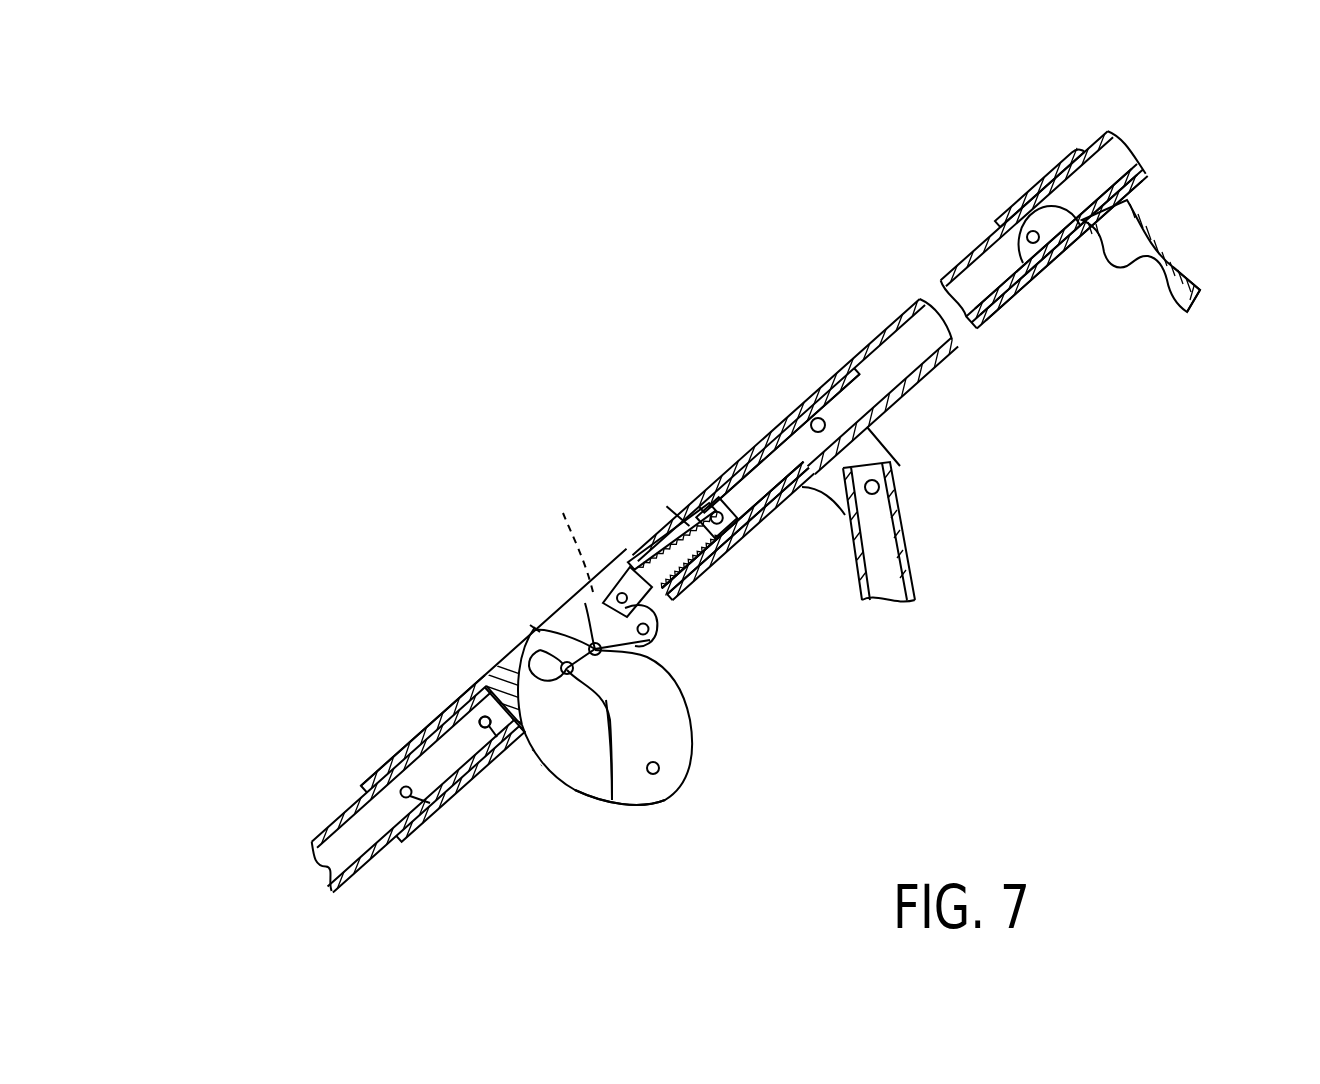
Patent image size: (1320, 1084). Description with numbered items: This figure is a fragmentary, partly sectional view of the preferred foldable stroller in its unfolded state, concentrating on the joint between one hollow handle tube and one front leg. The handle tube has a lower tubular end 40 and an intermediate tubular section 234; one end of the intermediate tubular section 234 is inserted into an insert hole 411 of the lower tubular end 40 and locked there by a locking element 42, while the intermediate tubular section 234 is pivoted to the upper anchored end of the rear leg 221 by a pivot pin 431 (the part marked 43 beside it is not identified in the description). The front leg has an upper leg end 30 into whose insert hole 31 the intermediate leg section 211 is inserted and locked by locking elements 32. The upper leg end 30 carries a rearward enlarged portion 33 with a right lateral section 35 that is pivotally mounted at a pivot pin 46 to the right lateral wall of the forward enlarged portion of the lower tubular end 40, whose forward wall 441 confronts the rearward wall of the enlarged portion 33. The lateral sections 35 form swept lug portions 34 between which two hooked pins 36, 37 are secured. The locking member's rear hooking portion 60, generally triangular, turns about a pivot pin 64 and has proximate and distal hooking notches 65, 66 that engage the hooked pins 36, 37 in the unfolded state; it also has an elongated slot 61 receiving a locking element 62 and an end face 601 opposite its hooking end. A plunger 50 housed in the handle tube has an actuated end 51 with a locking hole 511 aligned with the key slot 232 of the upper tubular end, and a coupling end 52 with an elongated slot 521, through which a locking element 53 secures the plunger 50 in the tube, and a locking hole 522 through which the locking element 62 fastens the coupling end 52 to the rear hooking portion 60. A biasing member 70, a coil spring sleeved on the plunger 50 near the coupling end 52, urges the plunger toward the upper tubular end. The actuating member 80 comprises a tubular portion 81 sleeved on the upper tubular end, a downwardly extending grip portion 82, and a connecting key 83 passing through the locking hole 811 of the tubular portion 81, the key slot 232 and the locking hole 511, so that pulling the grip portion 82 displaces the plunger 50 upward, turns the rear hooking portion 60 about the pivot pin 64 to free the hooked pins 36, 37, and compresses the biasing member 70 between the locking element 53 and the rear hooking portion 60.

The intermediate leg section 211 is at (338, 845).
The rear leg 221 is at (915, 578).
The key slot 232 is at (1083, 230).
The intermediate tubular section 234 is at (888, 322).
The upper leg end 30 is at (412, 738).
The insert hole 31 is at (385, 765).
The locking element 32 is at (430, 803).
The rearward enlarged portion 33 is at (497, 737).
The forward wall 441 is at (485, 722).
The swept lug portion 34 is at (543, 630).
The right lateral section 35 is at (656, 775).
The hooked pin 36 is at (693, 730).
The hooked pin 37 is at (608, 772).
The pivot pin 46 is at (653, 803).
The lower tubular end 40 is at (750, 433).
The insert hole 411 is at (795, 406).
The locking element 42 is at (822, 418).
The connecting link 43 is at (905, 475).
The pivot pin 431 is at (878, 492).
The plunger 50 is at (951, 342).
The actuated end 51 is at (980, 293).
The locking hole 511 is at (1025, 268).
The locking hole 811 is at (1064, 251).
The coupling end 52 is at (712, 533).
The elongated slot 521 is at (690, 545).
The locking hole 522 is at (675, 568).
The locking element 53 is at (720, 486).
The rear hooking portion 60 is at (585, 603).
The end face 601 is at (650, 628).
The elongated slot 61 is at (566, 534).
The locking element 62 is at (622, 585).
The pivot pin 64 is at (680, 632).
The proximate hooking notch 65 is at (522, 657).
The distal hooking notch 66 is at (545, 637).
The biasing member 70 is at (668, 503).
The actuating member 80 is at (1165, 244).
The tubular portion 81 is at (1038, 192).
The grip portion 82 is at (1181, 263).
The connecting key 83 is at (1040, 240).